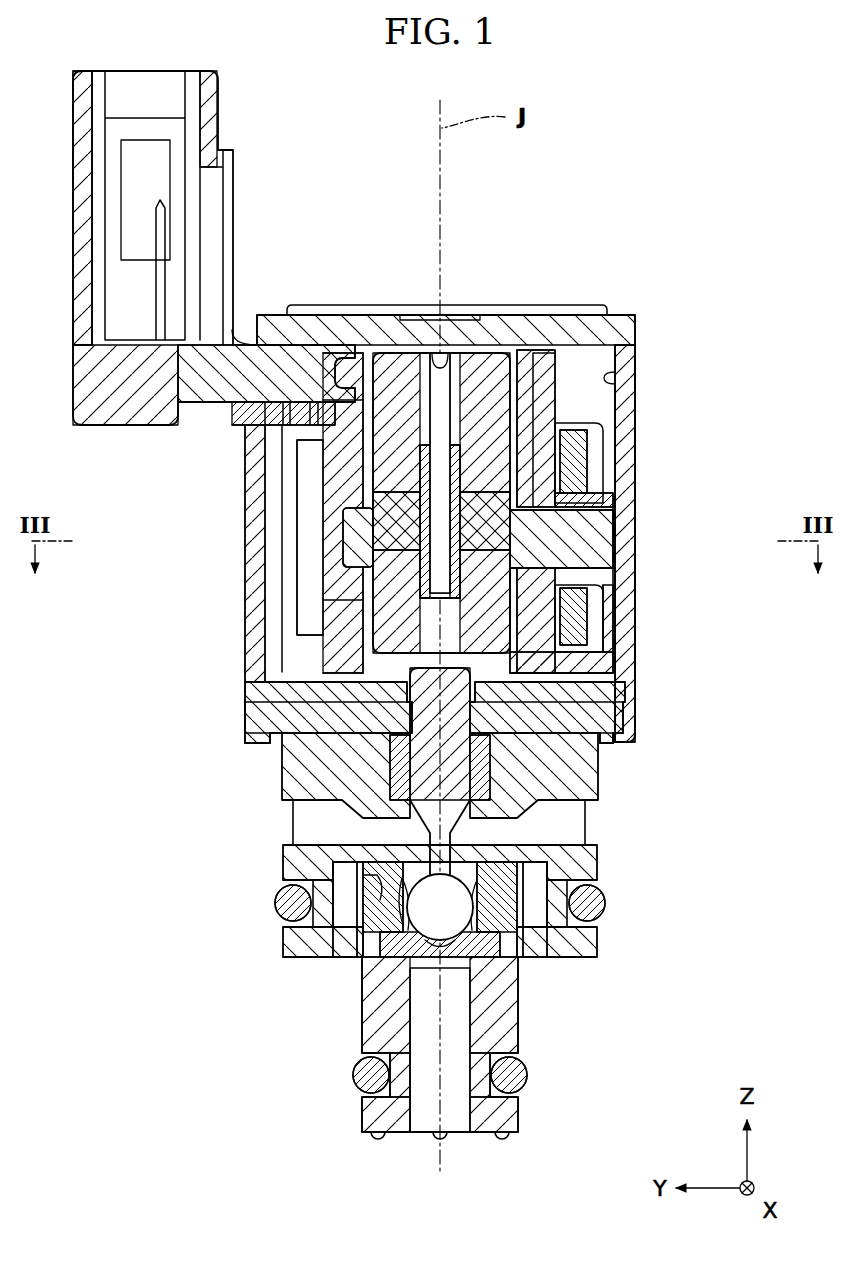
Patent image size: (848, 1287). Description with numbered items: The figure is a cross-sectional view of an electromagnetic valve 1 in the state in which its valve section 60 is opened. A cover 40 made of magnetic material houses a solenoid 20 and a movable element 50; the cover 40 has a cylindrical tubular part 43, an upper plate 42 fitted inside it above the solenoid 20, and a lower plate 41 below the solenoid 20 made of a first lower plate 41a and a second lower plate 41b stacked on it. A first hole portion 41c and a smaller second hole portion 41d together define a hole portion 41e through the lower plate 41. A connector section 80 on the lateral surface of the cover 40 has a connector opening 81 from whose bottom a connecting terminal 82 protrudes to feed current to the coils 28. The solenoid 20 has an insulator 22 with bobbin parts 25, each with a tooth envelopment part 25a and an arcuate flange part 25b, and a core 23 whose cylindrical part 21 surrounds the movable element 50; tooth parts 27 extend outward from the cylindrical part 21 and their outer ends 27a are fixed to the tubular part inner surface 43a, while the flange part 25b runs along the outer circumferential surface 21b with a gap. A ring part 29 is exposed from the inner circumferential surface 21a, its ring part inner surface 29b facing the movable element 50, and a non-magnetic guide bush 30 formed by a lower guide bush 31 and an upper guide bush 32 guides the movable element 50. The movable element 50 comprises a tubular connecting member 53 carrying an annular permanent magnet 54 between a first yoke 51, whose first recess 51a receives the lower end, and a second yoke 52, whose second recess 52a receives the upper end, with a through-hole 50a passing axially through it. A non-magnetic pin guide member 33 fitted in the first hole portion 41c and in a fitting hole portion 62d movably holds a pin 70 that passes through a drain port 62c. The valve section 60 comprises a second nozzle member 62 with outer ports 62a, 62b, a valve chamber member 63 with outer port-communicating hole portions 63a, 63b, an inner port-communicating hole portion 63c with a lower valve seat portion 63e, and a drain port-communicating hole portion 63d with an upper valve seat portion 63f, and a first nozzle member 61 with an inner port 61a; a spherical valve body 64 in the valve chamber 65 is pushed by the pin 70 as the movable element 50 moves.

The electromagnetic valve 1 is at (693, 164).
The connector section 80 is at (210, 125).
The connector opening 81 is at (93, 115).
The connecting terminal 82 is at (165, 232).
The cover 40 is at (644, 313).
The upper plate 42 is at (353, 336).
The tubular part 43 is at (618, 577).
The tubular part inner surface 43a is at (612, 378).
The second yoke 52 is at (400, 412).
The second recess 52a is at (372, 468).
The connecting member 53 is at (420, 490).
The guide bush 30 is at (138, 507).
The upper guide bush 32 is at (370, 510).
The ring part 29 is at (355, 548).
The ring part inner surface 29b is at (372, 566).
The lower guide bush 31 is at (347, 586).
The first yoke 51 is at (402, 628).
The first recess 51a is at (375, 600).
The movable element 50 is at (492, 346).
The through-hole 50a is at (452, 340).
The solenoid 20 is at (566, 378).
The insulator 22 is at (576, 412).
The permanent magnet 54 is at (580, 470).
The flange part 25b is at (594, 470).
The coils 28 is at (582, 484).
The tooth parts 27 is at (626, 545).
The outer ends 27a is at (614, 512).
The core 23 is at (620, 560).
The bobbin parts 25 is at (587, 620).
The tooth envelopment part 25a is at (614, 607).
The cylindrical part 21 is at (620, 656).
The outer circumferential surface 21b is at (560, 625).
The inner circumferential surface 21a is at (562, 658).
The lower plate 41 is at (150, 672).
The second lower plate 41b is at (270, 690).
The first lower plate 41a is at (272, 712).
The hole portion 41e is at (150, 735).
The second hole portion 41d is at (272, 728).
The first hole portion 41c is at (275, 741).
The pin 70 is at (462, 690).
The pin guide member 33 is at (402, 762).
The fitting hole portion 62d is at (447, 753).
The drain port 62c is at (590, 803).
The second nozzle member 62 is at (312, 952).
The outer port 62a is at (348, 944).
The outer port 62b is at (538, 950).
The outer port-communicating hole portion 63a is at (284, 904).
The valve chamber member 63 is at (493, 962).
The outer port-communicating hole portion 63b is at (477, 909).
The inner port-communicating hole portion 63c is at (447, 972).
The drain port-communicating hole portion 63d is at (470, 839).
The upper valve seat portion 63f is at (392, 921).
The valve body 64 is at (589, 906).
The valve chamber 65 is at (494, 883).
The valve section 60 is at (536, 1047).
The first nozzle member 61 is at (483, 1127).
The inner port 61a is at (420, 1130).
The lower valve seat portion 63e is at (437, 967).